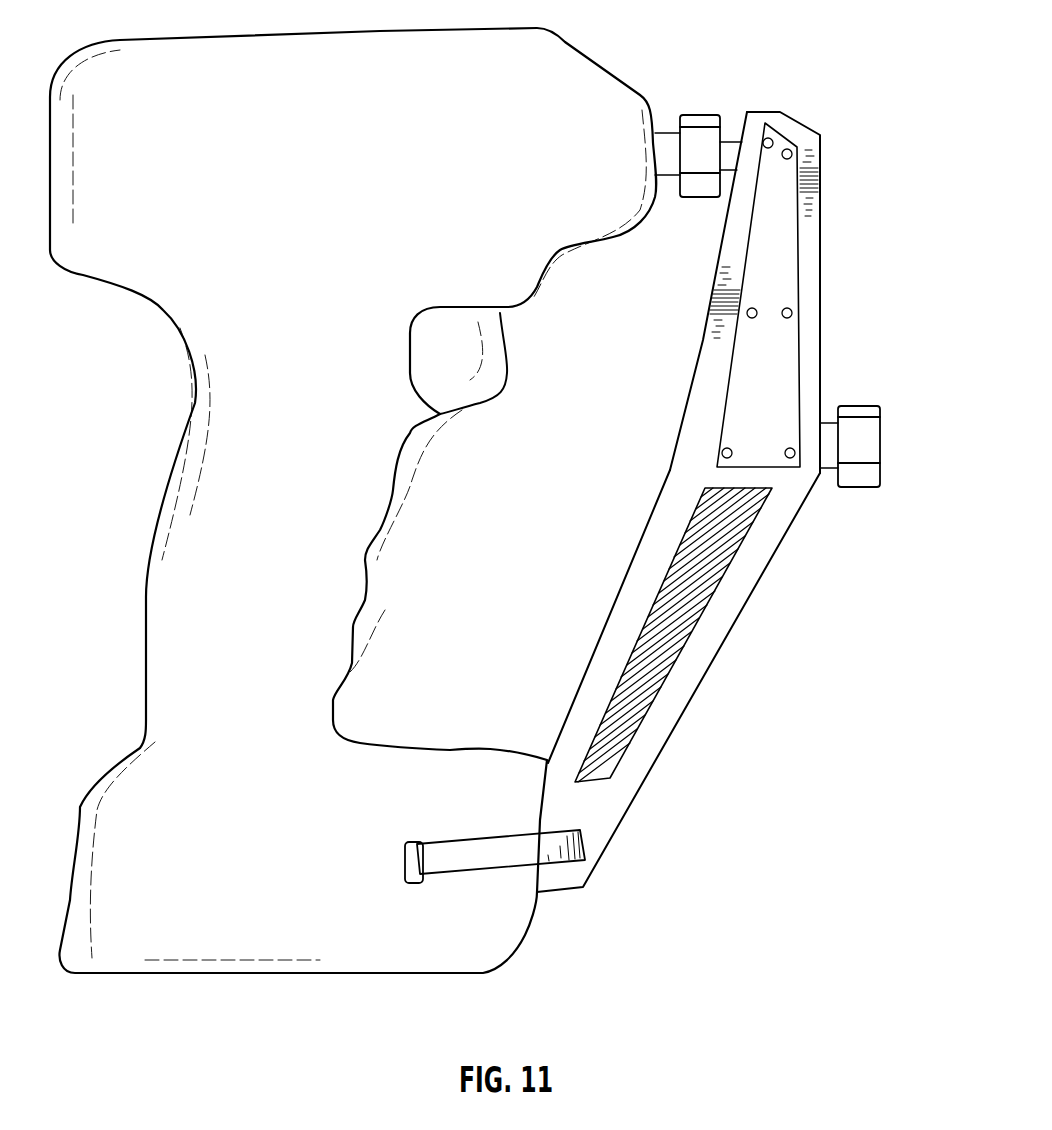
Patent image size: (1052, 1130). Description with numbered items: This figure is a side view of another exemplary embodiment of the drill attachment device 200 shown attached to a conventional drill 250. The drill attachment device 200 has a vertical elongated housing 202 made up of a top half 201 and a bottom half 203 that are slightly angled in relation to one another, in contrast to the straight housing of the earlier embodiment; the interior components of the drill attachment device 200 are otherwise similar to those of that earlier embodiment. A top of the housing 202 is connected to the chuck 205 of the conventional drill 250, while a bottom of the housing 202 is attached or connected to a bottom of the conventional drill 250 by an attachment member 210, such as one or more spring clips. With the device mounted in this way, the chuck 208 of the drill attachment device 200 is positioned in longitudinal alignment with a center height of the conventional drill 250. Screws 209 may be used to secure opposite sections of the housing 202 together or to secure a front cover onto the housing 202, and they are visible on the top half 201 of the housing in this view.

The drill attachment device 200 is at (797, 578).
The top half 201 is at (777, 252).
The vertical elongated housing 202 is at (608, 650).
The bottom half 203 is at (663, 630).
The chuck 205 is at (697, 125).
The chuck 208 is at (883, 444).
The screws 209 is at (773, 143).
The attachment member 210 is at (480, 875).
The conventional drill 250 is at (198, 442).